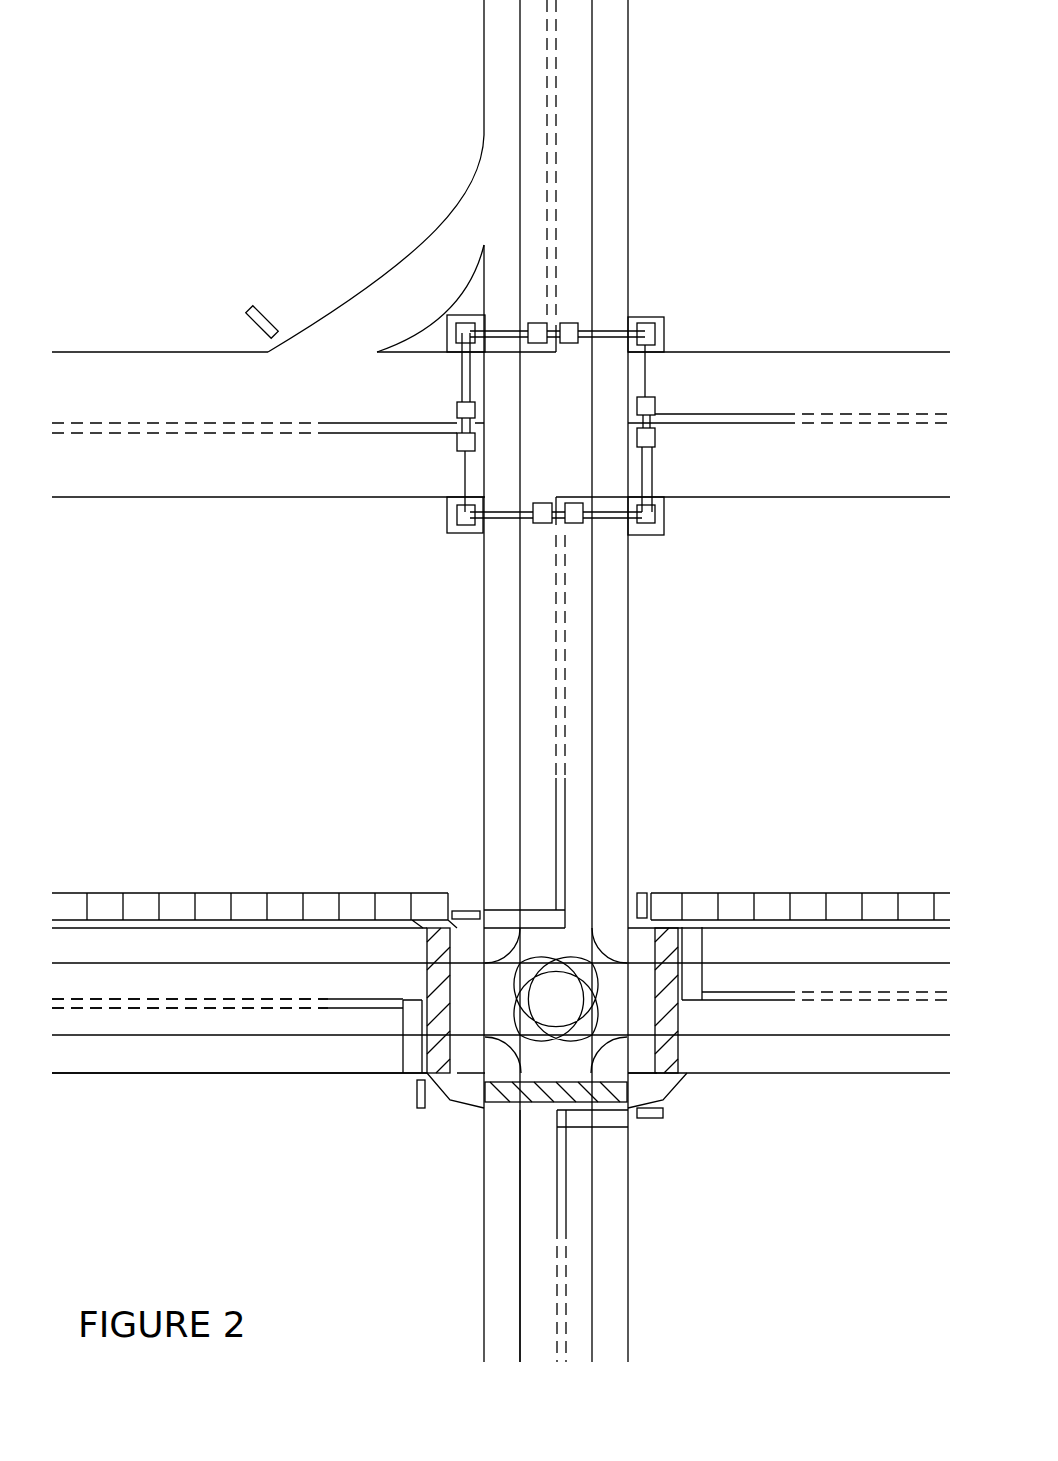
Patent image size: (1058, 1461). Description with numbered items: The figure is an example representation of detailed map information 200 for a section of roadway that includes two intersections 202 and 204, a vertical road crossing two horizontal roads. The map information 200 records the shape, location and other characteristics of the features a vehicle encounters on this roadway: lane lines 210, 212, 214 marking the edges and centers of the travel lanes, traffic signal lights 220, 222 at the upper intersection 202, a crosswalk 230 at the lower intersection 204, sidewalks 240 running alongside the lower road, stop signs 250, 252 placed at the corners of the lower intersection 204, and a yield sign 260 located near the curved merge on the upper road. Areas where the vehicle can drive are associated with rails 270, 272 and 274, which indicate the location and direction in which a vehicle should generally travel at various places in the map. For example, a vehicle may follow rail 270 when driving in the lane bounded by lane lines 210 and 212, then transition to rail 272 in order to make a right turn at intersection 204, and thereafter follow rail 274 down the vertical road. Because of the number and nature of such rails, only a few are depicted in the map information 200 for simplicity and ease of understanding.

The map information 200 is at (180, 1283).
The intersection 202 is at (555, 425).
The intersection 204 is at (556, 1000).
The lane line 210 is at (137, 1008).
The lane line 212 is at (207, 1073).
The lane line 214 is at (558, 100).
The traffic signal light 220 is at (456, 442).
The traffic signal light 222 is at (456, 405).
The crosswalk 230 is at (517, 1043).
The sidewalk 240 is at (730, 892).
The stop sign 250 is at (452, 911).
The stop sign 252 is at (665, 1115).
The yield sign 260 is at (247, 320).
The rail 270 is at (213, 1035).
The rail 272 is at (418, 1110).
The rail 274 is at (518, 1305).